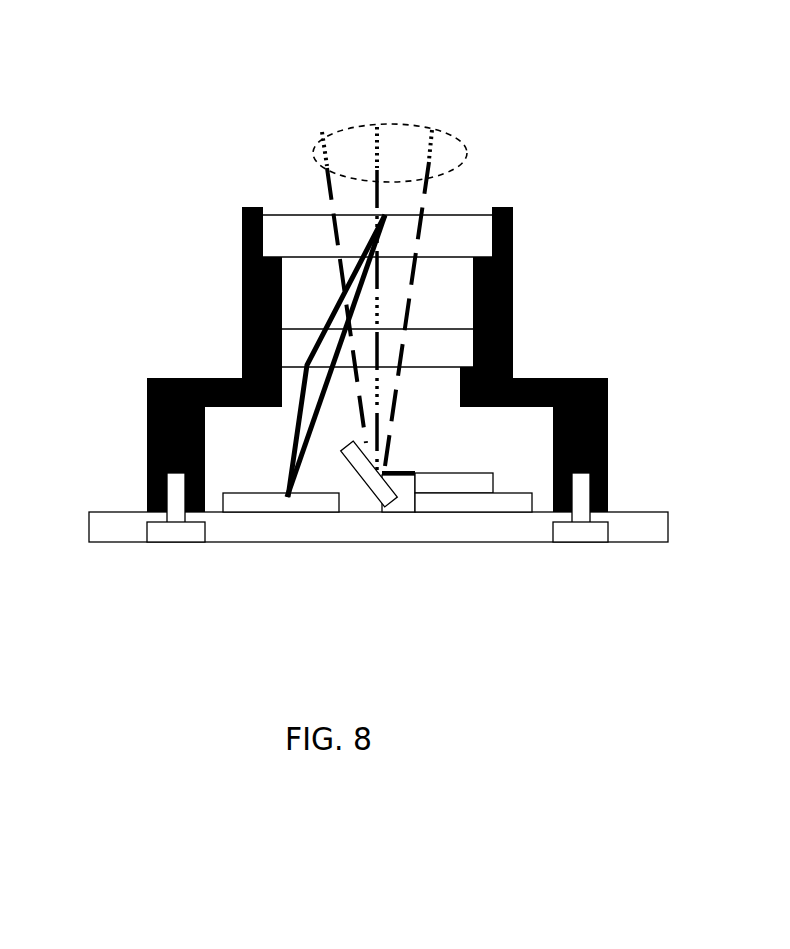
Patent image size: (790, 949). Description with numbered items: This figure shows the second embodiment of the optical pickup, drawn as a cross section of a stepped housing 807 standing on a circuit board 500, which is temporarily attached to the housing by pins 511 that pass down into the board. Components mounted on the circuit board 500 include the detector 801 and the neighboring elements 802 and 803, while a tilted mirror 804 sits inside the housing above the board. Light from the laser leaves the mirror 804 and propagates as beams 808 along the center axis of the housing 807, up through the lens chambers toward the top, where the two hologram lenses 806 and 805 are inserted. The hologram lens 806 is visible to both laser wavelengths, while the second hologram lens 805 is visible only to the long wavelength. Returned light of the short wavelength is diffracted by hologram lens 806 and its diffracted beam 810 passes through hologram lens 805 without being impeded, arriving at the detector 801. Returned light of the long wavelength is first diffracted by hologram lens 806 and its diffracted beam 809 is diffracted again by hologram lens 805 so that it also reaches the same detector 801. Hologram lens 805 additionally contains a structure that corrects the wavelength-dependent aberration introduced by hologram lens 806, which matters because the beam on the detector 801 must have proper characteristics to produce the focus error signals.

The circuit board 500 is at (225, 532).
The pins 511 is at (182, 530).
The detector 801 is at (258, 493).
The light receiving element 802 is at (515, 492).
The light receiving element 803 is at (478, 472).
The mirror / beam splitter 804 is at (337, 454).
The second hologram lens 805 is at (424, 328).
The hologram lens 806 is at (435, 235).
The housing 807 is at (592, 378).
The optical disc / light spot 808 is at (372, 126).
The diffracted beam 809 is at (327, 310).
The diffracted beam 810 is at (322, 386).